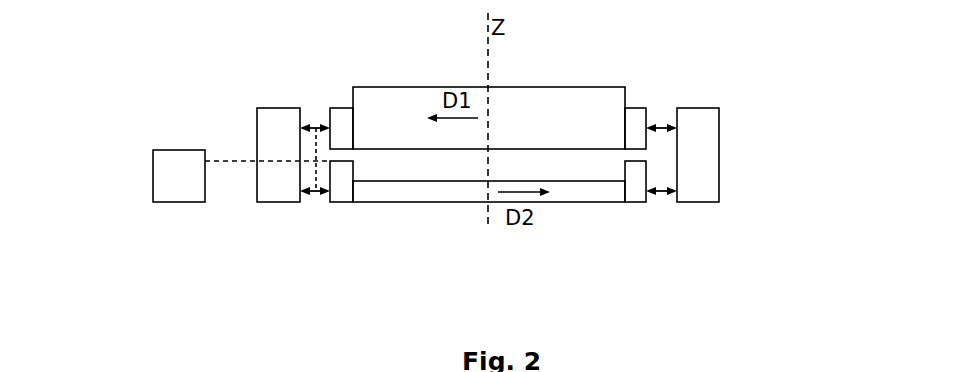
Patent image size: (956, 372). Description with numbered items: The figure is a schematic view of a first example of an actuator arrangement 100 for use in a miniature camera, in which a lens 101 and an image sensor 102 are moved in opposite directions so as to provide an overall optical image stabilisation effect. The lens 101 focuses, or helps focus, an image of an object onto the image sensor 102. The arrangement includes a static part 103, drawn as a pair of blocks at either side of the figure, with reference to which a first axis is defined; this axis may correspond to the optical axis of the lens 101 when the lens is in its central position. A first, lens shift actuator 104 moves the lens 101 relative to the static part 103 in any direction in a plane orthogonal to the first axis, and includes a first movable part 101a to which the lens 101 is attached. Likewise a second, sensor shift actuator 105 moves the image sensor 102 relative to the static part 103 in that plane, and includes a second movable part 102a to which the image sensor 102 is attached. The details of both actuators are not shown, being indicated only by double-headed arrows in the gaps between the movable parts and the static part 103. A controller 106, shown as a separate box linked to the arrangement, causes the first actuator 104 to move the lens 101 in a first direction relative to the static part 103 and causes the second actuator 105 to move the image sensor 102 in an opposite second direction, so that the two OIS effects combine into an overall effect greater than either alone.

The actuator arrangement 100 is at (157, 68).
The lens 101 is at (415, 98).
The first movable part 101a is at (339, 107).
The image sensor 102 is at (425, 192).
The second movable part 102a is at (338, 205).
The static part 103 is at (257, 137).
The first actuator 104 is at (315, 125).
The second actuator 105 is at (313, 203).
The controller 106 is at (153, 192).